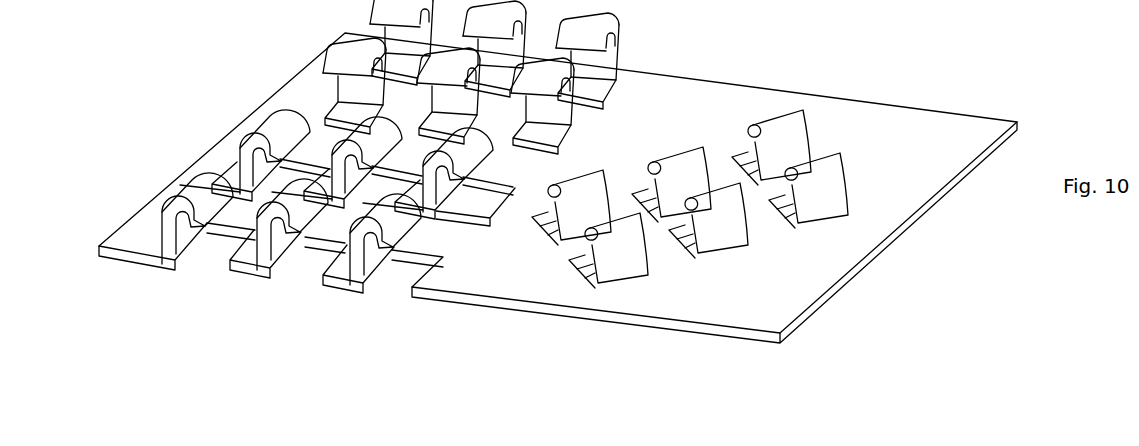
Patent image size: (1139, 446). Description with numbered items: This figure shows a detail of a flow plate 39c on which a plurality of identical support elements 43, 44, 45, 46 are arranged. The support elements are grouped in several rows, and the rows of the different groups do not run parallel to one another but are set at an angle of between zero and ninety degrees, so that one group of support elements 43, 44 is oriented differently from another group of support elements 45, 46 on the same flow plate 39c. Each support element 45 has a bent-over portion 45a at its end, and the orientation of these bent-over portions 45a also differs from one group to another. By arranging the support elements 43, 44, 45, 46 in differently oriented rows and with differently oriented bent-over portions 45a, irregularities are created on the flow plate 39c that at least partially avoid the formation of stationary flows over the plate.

The flow plate 39c is at (845, 285).
The support element 43 is at (610, 262).
The support element 44 is at (722, 240).
The support element 45 is at (352, 260).
The bent-over portion 45a is at (377, 242).
The support element 46 is at (442, 185).